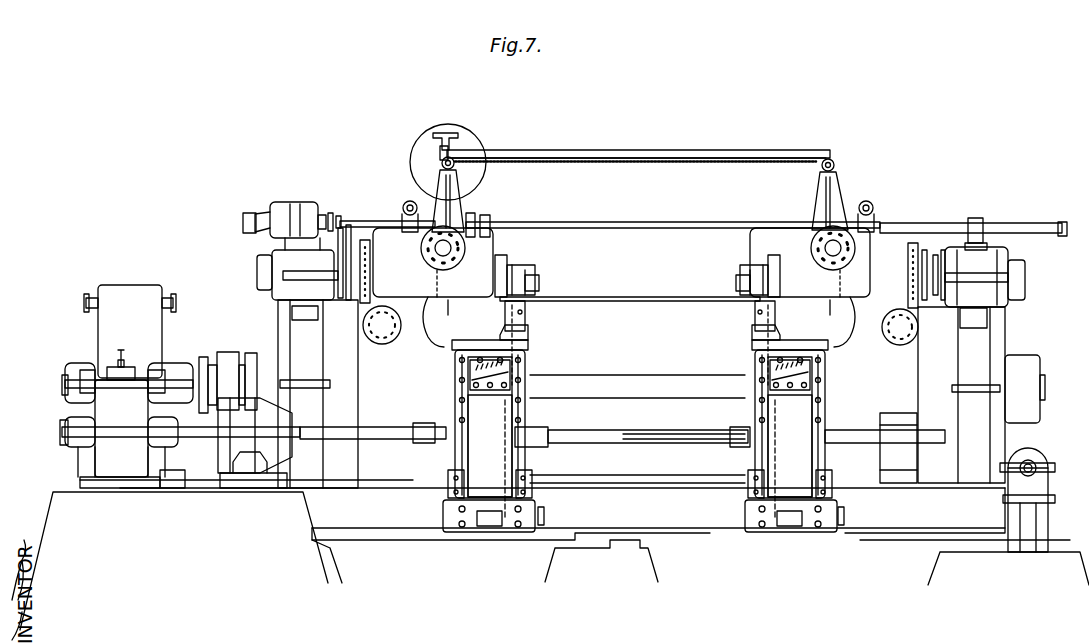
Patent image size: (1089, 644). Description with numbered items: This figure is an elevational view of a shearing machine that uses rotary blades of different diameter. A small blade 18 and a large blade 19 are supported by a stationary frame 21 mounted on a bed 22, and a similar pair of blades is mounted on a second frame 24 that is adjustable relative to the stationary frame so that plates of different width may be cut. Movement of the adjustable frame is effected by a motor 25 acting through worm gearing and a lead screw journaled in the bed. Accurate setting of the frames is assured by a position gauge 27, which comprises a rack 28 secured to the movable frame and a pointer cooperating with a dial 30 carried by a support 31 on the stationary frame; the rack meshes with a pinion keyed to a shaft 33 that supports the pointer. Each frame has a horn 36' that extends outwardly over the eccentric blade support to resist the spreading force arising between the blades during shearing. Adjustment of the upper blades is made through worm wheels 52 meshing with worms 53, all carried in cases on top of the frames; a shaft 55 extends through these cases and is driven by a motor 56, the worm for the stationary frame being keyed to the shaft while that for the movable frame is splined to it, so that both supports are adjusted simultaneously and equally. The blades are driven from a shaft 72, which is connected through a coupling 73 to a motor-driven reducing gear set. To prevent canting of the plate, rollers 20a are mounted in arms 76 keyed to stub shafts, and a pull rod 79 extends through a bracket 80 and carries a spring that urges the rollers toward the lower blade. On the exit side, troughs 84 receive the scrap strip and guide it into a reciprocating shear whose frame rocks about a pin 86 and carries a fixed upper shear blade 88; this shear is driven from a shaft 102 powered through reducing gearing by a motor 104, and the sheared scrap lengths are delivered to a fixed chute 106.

The small blade 18 is at (503, 262).
The large blade 19 is at (516, 310).
The rollers 20a is at (540, 285).
The stationary frame 21 is at (433, 262).
The bed 22 is at (554, 552).
The frame 24 is at (875, 268).
The motor 25 is at (1040, 450).
The position gauge 27 is at (632, 150).
The rack 28 is at (635, 175).
The dial 30 is at (470, 137).
The support 31 is at (456, 186).
The shaft 33 is at (455, 164).
The horn 36' is at (810, 262).
The worm wheel 52 is at (437, 280).
The worm 53 is at (420, 249).
The shaft 55 is at (359, 221).
The motor 56 is at (302, 212).
The shaft 72 is at (194, 353).
The coupling 73 is at (233, 355).
The arms 76 is at (528, 280).
The pull rod 79 is at (404, 203).
The bracket 80 is at (880, 221).
The troughs 84 is at (520, 335).
The pin 86 is at (540, 512).
The fixed upper shear blade 88 is at (505, 370).
The shaft 102 is at (358, 440).
The motor 104 is at (230, 460).
The fixed chute 106 is at (496, 483).